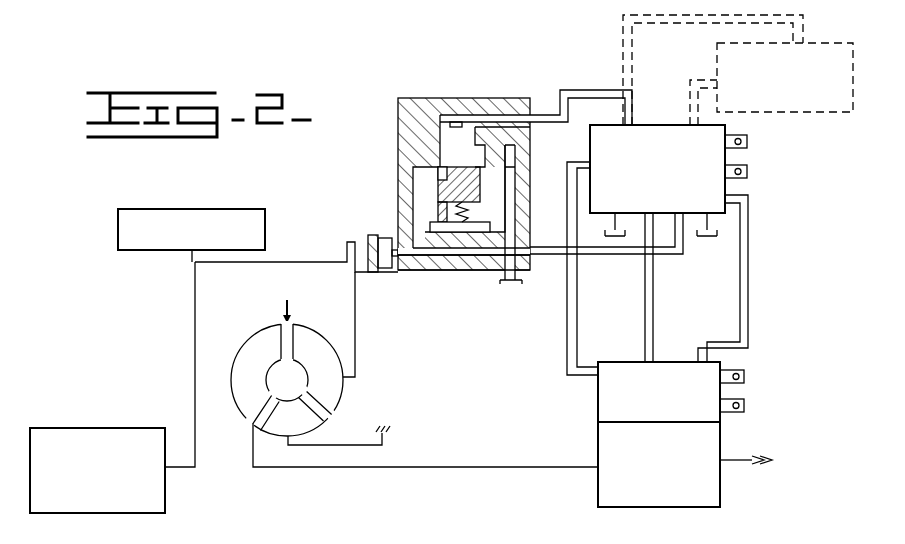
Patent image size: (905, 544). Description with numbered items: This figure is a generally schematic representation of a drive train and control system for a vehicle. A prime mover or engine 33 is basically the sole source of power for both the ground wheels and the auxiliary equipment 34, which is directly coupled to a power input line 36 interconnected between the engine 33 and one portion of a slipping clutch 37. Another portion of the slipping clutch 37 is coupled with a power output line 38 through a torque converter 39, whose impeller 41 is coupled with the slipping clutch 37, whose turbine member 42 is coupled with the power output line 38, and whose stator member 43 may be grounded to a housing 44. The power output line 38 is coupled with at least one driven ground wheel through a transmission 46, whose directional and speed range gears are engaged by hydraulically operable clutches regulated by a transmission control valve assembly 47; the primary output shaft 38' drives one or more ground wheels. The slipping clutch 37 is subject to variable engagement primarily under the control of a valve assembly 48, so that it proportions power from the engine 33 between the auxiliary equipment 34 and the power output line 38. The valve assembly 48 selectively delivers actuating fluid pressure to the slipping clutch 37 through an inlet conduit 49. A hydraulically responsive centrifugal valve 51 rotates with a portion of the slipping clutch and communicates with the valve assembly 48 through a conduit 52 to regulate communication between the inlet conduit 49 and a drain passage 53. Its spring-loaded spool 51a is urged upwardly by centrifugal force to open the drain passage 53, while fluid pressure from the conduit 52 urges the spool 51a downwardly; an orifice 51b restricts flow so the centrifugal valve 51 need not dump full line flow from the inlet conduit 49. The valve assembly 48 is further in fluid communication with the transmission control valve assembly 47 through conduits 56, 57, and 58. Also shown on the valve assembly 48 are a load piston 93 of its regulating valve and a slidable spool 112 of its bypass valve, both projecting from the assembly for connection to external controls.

The prime mover or engine 33 is at (110, 432).
The auxiliary equipment 34 is at (118, 227).
The power input line 36 is at (195, 318).
The slipping clutch 37 is at (336, 242).
The power output line 38 is at (425, 458).
The primary output shaft 38' is at (784, 472).
The torque converter 39 is at (287, 302).
The impeller 41 is at (338, 380).
The turbine member 42 is at (258, 340).
The stator member 43 is at (304, 430).
The housing 44 is at (387, 432).
The transmission 46 is at (608, 485).
The transmission control valve assembly 47 is at (598, 412).
The valve assembly 48 is at (666, 125).
The inlet conduit 49 is at (518, 260).
The centrifugal valve 51 is at (416, 140).
The spool 51a is at (438, 189).
The orifice 51b is at (467, 262).
The conduit 52 is at (582, 90).
The drain passage 53 is at (515, 178).
The conduit 56 is at (654, 302).
The conduit 57 is at (577, 296).
The conduit 58 is at (749, 310).
The load piston 93 is at (747, 171).
The slidable spool 112 is at (747, 141).